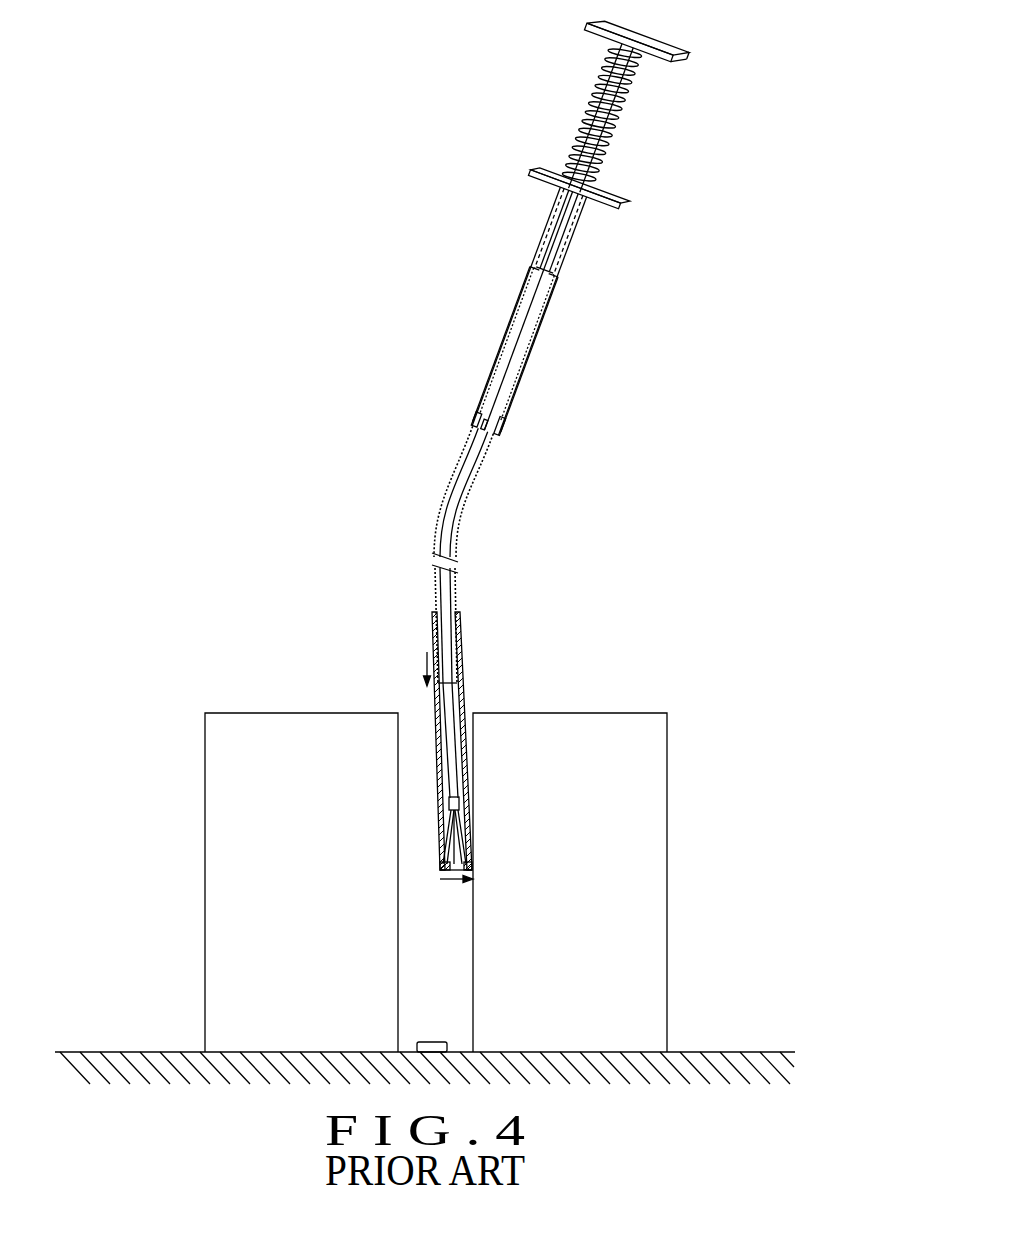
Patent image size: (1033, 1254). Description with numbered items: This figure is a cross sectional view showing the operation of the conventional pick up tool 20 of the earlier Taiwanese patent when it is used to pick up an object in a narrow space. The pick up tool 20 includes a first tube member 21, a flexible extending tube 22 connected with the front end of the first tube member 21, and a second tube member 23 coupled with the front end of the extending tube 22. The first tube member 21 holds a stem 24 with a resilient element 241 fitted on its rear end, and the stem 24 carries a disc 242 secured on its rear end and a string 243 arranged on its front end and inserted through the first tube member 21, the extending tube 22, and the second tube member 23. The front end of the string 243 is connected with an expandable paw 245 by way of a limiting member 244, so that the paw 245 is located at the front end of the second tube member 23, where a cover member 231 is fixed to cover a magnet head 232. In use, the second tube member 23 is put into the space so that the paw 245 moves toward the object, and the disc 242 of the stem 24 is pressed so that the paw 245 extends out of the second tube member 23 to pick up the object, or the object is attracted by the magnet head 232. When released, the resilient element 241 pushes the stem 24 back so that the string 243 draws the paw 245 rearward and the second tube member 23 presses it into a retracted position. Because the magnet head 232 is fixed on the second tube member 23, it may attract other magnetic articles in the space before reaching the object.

The pick up tool 20 is at (470, 290).
The first tube member 21 is at (533, 333).
The flexible extending tube 22 is at (468, 480).
The second tube member 23 is at (433, 638).
The stem 24 is at (600, 165).
The resilient element 241 is at (615, 123).
The disc 242 is at (660, 44).
The string 243 is at (452, 707).
The limiting member 244 is at (458, 803).
The expandable paw 245 is at (442, 836).
The cover member 231 is at (470, 860).
The magnet head 232 is at (472, 867).